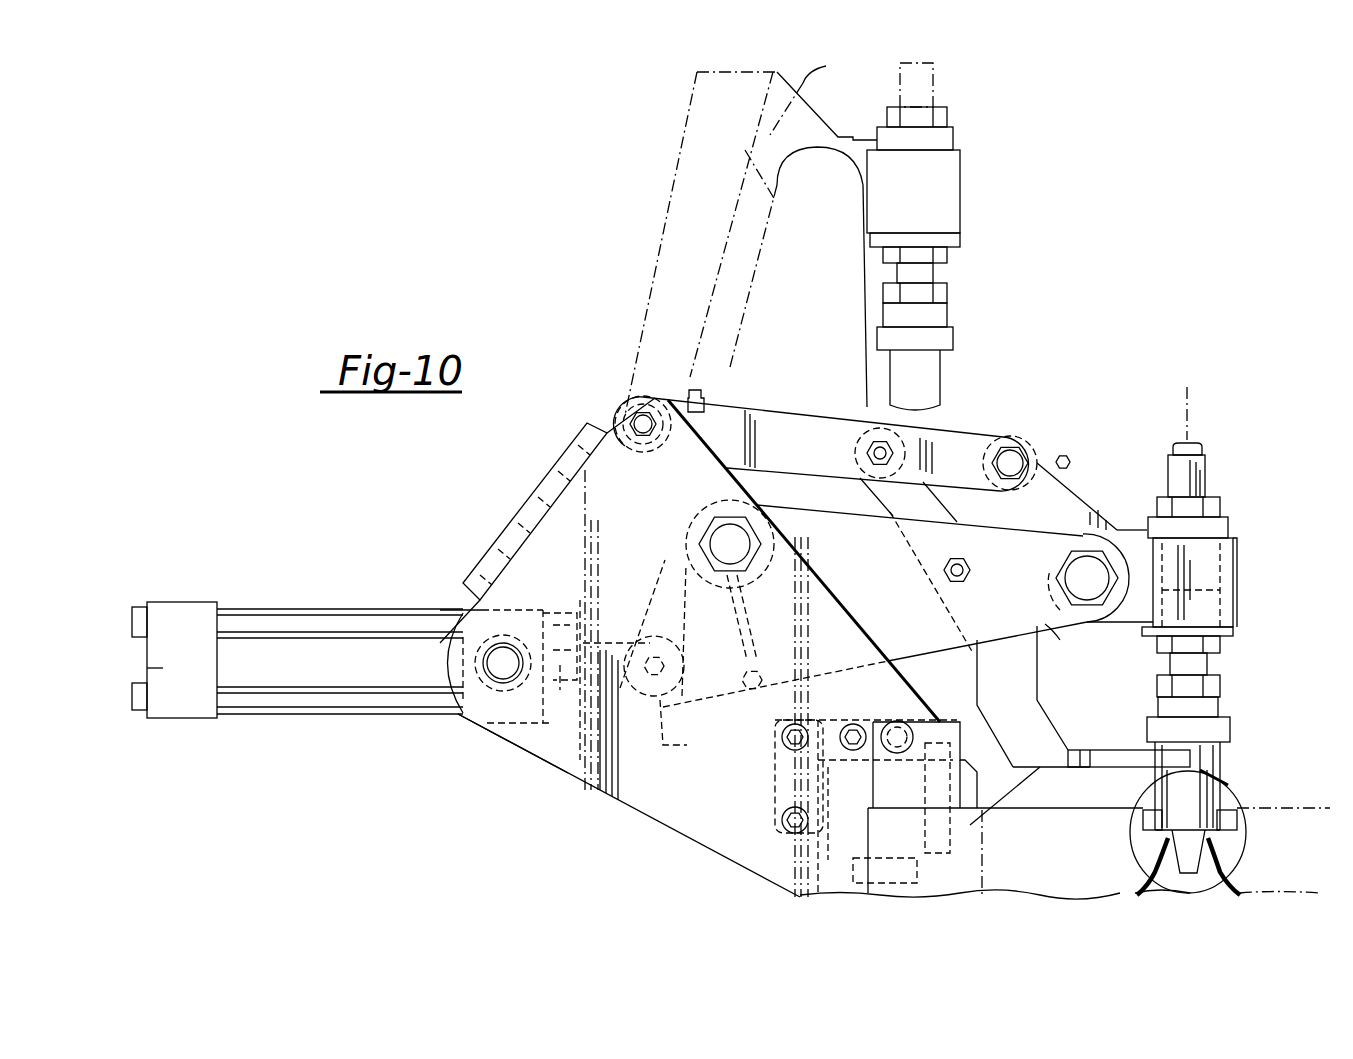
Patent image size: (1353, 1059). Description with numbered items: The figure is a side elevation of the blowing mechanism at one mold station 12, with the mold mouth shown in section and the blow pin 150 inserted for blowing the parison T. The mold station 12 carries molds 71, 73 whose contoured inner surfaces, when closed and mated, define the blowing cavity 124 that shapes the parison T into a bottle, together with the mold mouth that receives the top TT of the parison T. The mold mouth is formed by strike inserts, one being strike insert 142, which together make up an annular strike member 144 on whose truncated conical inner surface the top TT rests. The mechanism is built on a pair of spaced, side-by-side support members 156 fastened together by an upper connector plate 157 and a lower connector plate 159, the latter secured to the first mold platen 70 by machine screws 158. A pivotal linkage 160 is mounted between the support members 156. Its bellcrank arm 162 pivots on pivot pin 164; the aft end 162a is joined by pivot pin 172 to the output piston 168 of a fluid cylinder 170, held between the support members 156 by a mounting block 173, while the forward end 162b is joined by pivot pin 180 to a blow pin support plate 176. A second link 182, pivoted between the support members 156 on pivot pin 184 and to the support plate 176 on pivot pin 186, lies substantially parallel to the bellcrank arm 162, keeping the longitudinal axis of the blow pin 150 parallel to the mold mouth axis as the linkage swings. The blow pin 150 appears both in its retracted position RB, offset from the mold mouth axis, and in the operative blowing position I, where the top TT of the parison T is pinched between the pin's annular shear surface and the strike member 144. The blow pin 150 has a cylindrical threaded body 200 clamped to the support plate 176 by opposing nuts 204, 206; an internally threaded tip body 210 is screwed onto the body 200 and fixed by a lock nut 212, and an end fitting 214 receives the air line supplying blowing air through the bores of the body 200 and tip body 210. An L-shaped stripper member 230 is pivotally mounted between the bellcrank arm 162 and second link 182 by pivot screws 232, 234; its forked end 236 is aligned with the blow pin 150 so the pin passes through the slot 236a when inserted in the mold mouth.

The mold station 12 is at (1239, 793).
The first mold platen 70 is at (1030, 770).
The mold 71 is at (1037, 814).
The mold 73 is at (1253, 857).
The blowing cavity 124 is at (1238, 888).
The strike insert 142 is at (1152, 808).
The annular strike member 144 is at (1252, 810).
The blow pin 150 is at (950, 372).
The support members 156 is at (648, 808).
The upper connector plate 157 is at (556, 455).
The machine screws 158 is at (876, 806).
The lower connector plate 159 is at (800, 848).
The pivotal linkage 160 is at (832, 280).
The bellcrank arm 162 is at (920, 655).
The aft end 162a is at (697, 730).
The forward end 162b is at (1074, 642).
The pivot pin 164 is at (730, 546).
The output piston 168 is at (573, 773).
The fluid cylinder 170 is at (313, 680).
The pivot pin 172 is at (660, 700).
The mounting block 173 is at (487, 723).
The blow pin support plate 176 is at (1112, 525).
The pivot pin 180 is at (1075, 580).
The second link 182 is at (660, 246).
The pivot pin 184 is at (630, 426).
The pivot pin 186 is at (1015, 462).
The cylindrical threaded body 200 is at (1207, 662).
The nut 204 is at (1220, 505).
The nut 206 is at (1220, 645).
The tip body 210 is at (1150, 715).
The lock nut 212 is at (1220, 682).
The end fitting 214 is at (1205, 467).
The stripper member 230 is at (980, 682).
The pivot screw 232 is at (948, 574).
The pivot screw 234 is at (866, 450).
The forked end 236 is at (1125, 750).
The slot 236a is at (1080, 748).
The retracted position RB is at (970, 194).
The operative blowing position I is at (1250, 620).
The top of parison TT is at (1140, 838).
The parison T is at (1132, 892).